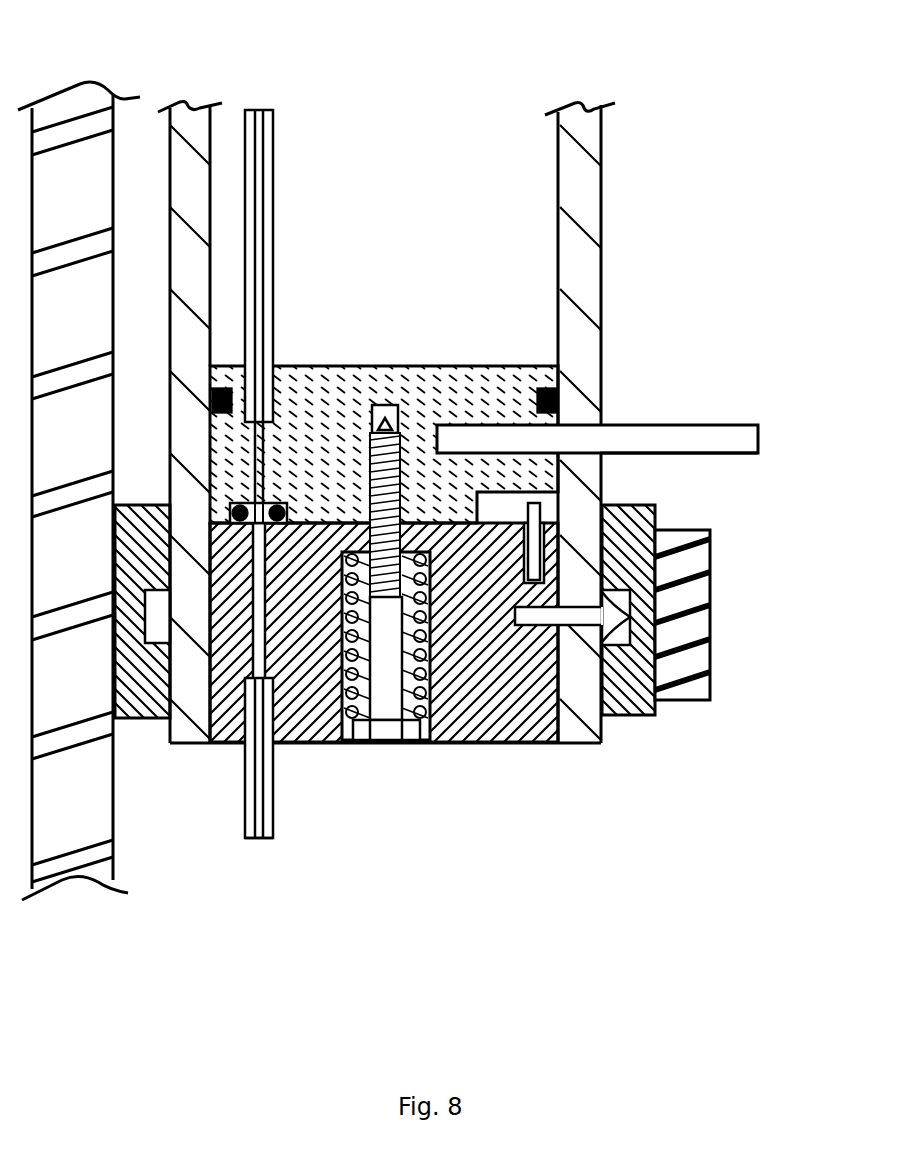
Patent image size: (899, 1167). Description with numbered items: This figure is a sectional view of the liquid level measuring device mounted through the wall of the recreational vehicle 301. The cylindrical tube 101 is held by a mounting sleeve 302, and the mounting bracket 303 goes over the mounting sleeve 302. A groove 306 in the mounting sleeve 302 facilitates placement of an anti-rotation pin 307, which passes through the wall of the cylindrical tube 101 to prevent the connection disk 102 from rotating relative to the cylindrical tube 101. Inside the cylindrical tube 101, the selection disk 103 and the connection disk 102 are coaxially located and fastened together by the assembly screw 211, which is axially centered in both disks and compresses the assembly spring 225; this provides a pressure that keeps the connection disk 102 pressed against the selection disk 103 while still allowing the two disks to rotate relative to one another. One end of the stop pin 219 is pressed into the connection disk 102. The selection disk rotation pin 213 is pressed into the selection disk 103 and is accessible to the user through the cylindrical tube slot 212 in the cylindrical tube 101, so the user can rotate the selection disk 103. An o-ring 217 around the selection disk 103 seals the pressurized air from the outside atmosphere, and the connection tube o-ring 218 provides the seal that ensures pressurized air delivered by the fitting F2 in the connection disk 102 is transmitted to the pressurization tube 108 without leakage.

The wall of the recreational vehicle 301 is at (98, 84).
The cylindrical tube 101 is at (181, 103).
The pressurization tube 108 is at (250, 110).
The connection tube o-ring 218 is at (282, 497).
The selection disk 103 is at (437, 366).
The o-ring 217 is at (557, 400).
The cylindrical tube slot 212 is at (535, 427).
The selection disk rotation pin 213 is at (697, 453).
The stop pin 219 is at (541, 505).
The mounting bracket 303 is at (711, 600).
The mounting sleeve 302 is at (633, 713).
The anti-rotation pin 307 is at (590, 628).
The groove 306 is at (152, 625).
The fitting F2 is at (243, 770).
The connection disk 102 is at (303, 745).
The assembly screw 211 is at (353, 745).
The assembly spring 225 is at (418, 745).